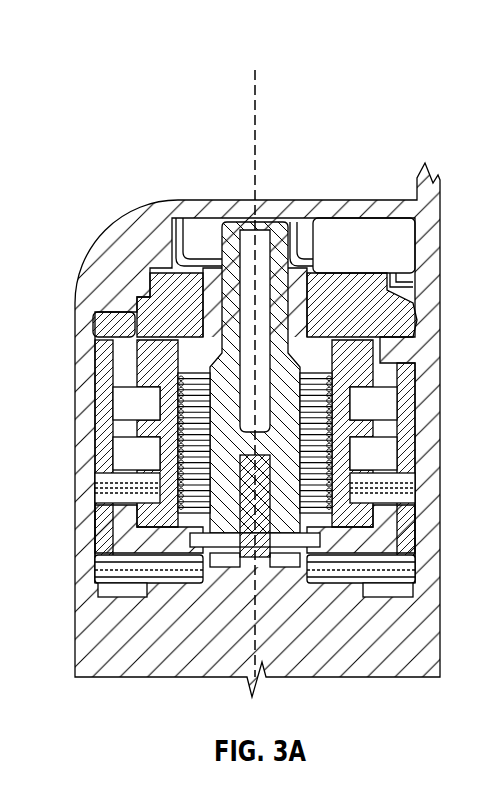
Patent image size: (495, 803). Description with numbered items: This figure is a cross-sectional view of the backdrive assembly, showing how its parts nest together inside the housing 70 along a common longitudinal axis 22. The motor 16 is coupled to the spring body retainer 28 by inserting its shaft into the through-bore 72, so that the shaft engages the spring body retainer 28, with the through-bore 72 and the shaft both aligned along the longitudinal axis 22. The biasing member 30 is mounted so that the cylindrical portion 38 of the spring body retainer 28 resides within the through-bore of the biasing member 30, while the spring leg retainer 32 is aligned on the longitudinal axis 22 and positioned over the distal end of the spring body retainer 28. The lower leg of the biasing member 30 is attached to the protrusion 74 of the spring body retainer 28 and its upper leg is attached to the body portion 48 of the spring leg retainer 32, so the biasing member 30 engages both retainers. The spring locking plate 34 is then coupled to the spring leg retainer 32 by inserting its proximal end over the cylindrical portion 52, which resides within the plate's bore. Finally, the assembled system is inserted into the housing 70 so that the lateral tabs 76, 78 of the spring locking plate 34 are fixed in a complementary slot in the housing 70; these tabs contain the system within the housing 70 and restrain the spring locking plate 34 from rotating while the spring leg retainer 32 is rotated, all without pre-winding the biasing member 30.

The motor 16 is at (204, 662).
The longitudinal axis 22 is at (260, 93).
The spring body retainer 28 is at (100, 543).
The biasing member 30 is at (357, 487).
The spring leg retainer 32 is at (118, 370).
The spring locking plate 34 is at (172, 300).
The cylindrical portion 38 is at (225, 420).
The body portion 48 is at (347, 357).
The cylindrical portion 52 is at (282, 260).
The housing 70 is at (162, 217).
The through-bore 72 is at (300, 507).
The protrusion 74 is at (303, 551).
The lateral tab 76 is at (100, 322).
The lateral tab 78 is at (408, 322).